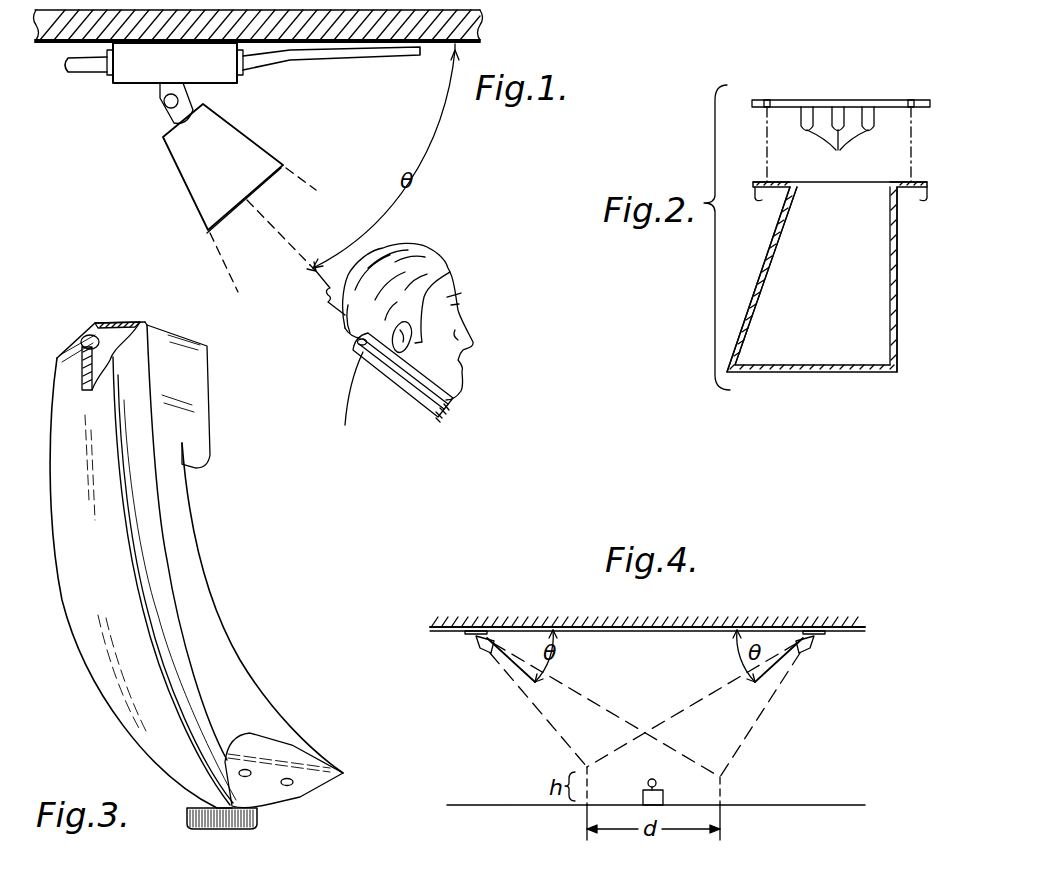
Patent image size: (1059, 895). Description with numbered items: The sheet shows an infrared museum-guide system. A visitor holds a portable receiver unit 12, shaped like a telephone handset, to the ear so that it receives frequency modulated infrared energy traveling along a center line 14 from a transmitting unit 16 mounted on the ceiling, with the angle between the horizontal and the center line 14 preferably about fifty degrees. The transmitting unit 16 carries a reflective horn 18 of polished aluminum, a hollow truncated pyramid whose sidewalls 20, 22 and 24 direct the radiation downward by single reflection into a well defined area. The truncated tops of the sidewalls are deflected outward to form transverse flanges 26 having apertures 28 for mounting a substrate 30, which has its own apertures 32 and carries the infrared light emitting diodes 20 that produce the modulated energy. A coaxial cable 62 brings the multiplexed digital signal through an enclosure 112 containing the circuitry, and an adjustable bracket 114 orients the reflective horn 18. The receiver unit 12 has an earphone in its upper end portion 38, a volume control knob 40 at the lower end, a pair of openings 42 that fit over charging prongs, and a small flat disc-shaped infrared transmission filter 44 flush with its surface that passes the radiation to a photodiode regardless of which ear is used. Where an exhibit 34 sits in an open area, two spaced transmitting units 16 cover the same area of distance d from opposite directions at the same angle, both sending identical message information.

In FIG. 1, the receiver unit 12 is at (409, 436).
In FIG. 3, the receiver unit 12 is at (232, 592).
In FIG. 1, the center line of transmission 14 is at (302, 268).
In FIG. 1, the transmitting unit 16 is at (218, 97).
In FIG. 4, the transmitting unit 16 is at (475, 657).
In FIG. 1, the reflective horn 18 is at (183, 211).
In FIG. 2, the reflective horn 18 is at (801, 387).
In FIG. 2, the light emitting diodes 20 is at (913, 300).
In FIG. 2, the sidewall 22 is at (832, 326).
In FIG. 2, the sidewall 24 is at (770, 256).
In FIG. 2, the transverse flanges 26 is at (755, 200).
In FIG. 2, the apertures 28 is at (766, 180).
In FIG. 2, the substrate 30 is at (790, 100).
In FIG. 2, the apertures 32 is at (767, 98).
In FIG. 4, the exhibit 34 is at (702, 789).
In FIG. 3, the upper end portion 38 is at (215, 420).
In FIG. 1, the volume control knob 40 is at (444, 420).
In FIG. 3, the volume control knob 40 is at (238, 830).
In FIG. 3, the openings 42 is at (250, 778).
In FIG. 1, the infrared transmission filter 44 is at (357, 344).
In FIG. 3, the infrared transmission filter 44 is at (90, 334).
In FIG. 1, the cable 62 is at (78, 76).
In FIG. 1, the enclosure 112 is at (129, 85).
In FIG. 1, the adjustable bracket 114 is at (163, 118).